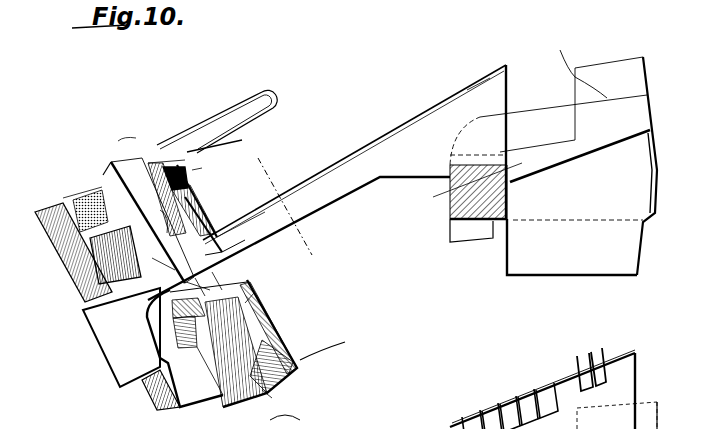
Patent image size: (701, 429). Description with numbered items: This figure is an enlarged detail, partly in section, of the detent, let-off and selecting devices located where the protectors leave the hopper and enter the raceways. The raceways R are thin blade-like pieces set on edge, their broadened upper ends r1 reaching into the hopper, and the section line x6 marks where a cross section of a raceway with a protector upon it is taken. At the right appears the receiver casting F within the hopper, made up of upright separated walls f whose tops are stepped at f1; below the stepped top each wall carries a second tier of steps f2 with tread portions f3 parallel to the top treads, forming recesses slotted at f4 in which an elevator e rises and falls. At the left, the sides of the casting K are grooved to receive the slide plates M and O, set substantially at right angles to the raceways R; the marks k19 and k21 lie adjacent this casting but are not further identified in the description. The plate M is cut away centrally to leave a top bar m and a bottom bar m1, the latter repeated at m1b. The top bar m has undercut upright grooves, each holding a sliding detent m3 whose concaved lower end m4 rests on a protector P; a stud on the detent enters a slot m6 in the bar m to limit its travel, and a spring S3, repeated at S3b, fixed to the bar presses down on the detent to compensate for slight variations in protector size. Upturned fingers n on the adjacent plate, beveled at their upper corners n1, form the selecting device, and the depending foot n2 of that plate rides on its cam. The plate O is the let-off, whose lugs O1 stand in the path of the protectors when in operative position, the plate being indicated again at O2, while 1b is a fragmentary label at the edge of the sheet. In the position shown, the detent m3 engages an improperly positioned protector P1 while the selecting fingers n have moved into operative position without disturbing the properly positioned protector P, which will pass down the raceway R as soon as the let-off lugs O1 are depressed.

The raceways R is at (352, 158).
The broadened upper ends of raceways r1 is at (468, 90).
The section line x6— x6 is at (289, 210).
The casting K is at (63, 277).
The key spring k19 is at (73, 200).
The key spring block k21 is at (93, 260).
The slide plate O is at (104, 175).
The let-off lugs O1 is at (160, 318).
The slab end O2 is at (256, 291).
The top bar m is at (158, 143).
The bottom bar m1 is at (154, 210).
The spring arm lower m1b is at (296, 366).
The sliding detent member m3 is at (127, 133).
The concaved lower end of detent m4 is at (194, 172).
The slot or recess m6 is at (214, 137).
The spring S3 is at (276, 104).
The spring loop lower S3b is at (297, 414).
The improperly positioned protector P1 is at (218, 217).
The upturned fingers n is at (218, 278).
The beveled upper corners of fingers n1 is at (156, 252).
The depending foot of plate N n2 is at (272, 399).
The protector P is at (140, 297).
The slide plate M is at (268, 312).
The numeral 1b is at (383, 425).
The second tier of steps f2 is at (465, 191).
The casting F is at (501, 226).
The stepped tops f1 is at (537, 105).
The tread portions f3 is at (577, 60).
The upright separated walls f is at (628, 67).
The elevator e is at (632, 354).
The slots f4 is at (510, 197).